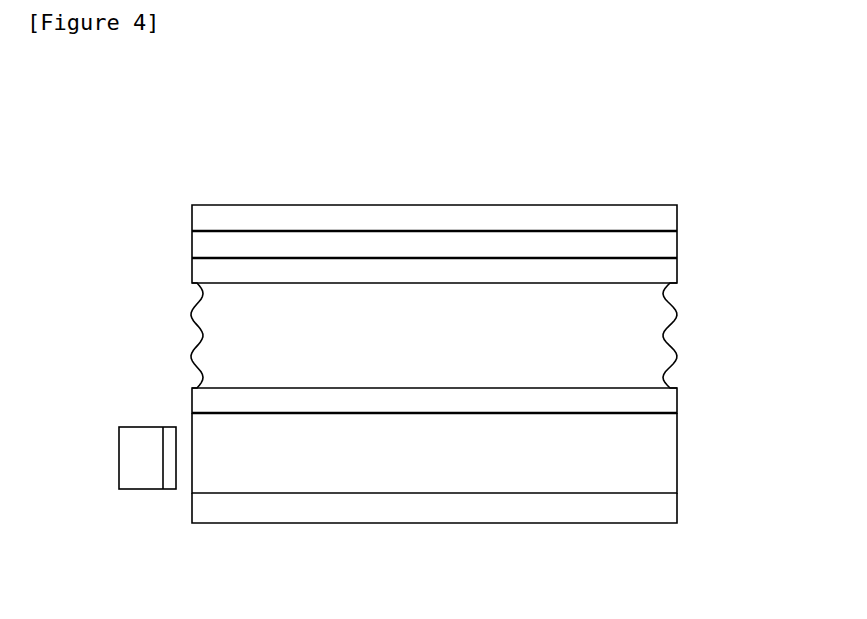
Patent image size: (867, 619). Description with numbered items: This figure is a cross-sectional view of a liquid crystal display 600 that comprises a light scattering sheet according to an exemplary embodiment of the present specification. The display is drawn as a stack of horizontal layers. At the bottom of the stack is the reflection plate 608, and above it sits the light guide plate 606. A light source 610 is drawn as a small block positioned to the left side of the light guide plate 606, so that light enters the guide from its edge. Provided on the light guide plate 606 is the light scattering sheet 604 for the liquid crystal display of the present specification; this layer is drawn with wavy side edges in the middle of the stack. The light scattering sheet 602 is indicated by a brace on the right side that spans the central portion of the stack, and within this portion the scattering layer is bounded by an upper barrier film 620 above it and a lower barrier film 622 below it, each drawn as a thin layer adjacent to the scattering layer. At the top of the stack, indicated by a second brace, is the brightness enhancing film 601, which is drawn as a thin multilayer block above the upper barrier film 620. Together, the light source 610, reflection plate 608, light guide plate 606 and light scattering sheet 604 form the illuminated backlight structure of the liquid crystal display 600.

The liquid crystal display 600 is at (188, 148).
The brightness enhancing film 601 is at (687, 207).
The light scattering sheet 602 is at (686, 418).
The light scattering sheet 604 is at (192, 328).
The light guide plate 606 is at (677, 478).
The reflection plate 608 is at (290, 523).
The light source 610 is at (124, 489).
The upper barrier film 620 is at (190, 268).
The lower barrier film 622 is at (192, 407).